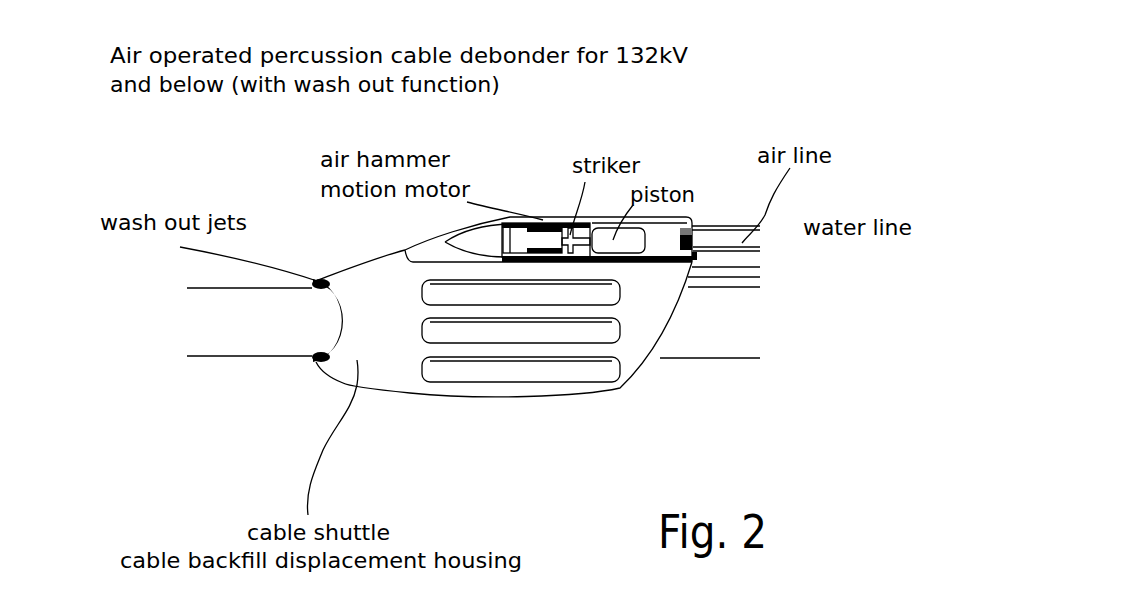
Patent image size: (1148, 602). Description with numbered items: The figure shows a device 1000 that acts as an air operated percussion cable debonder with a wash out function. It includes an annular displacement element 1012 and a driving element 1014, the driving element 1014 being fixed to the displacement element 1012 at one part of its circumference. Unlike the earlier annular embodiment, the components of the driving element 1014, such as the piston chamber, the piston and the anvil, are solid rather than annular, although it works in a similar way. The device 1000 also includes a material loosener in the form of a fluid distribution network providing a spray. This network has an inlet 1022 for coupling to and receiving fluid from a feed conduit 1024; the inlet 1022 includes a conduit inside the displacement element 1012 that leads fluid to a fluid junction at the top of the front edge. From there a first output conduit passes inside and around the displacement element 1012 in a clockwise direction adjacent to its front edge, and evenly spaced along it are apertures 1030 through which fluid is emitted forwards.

The device 1000 is at (678, 167).
The annular displacement element 1012 is at (387, 358).
The driving element 1014 is at (557, 238).
The inlet 1022 is at (685, 263).
The feed conduit 1024 is at (803, 230).
The apertures 1030 is at (317, 280).